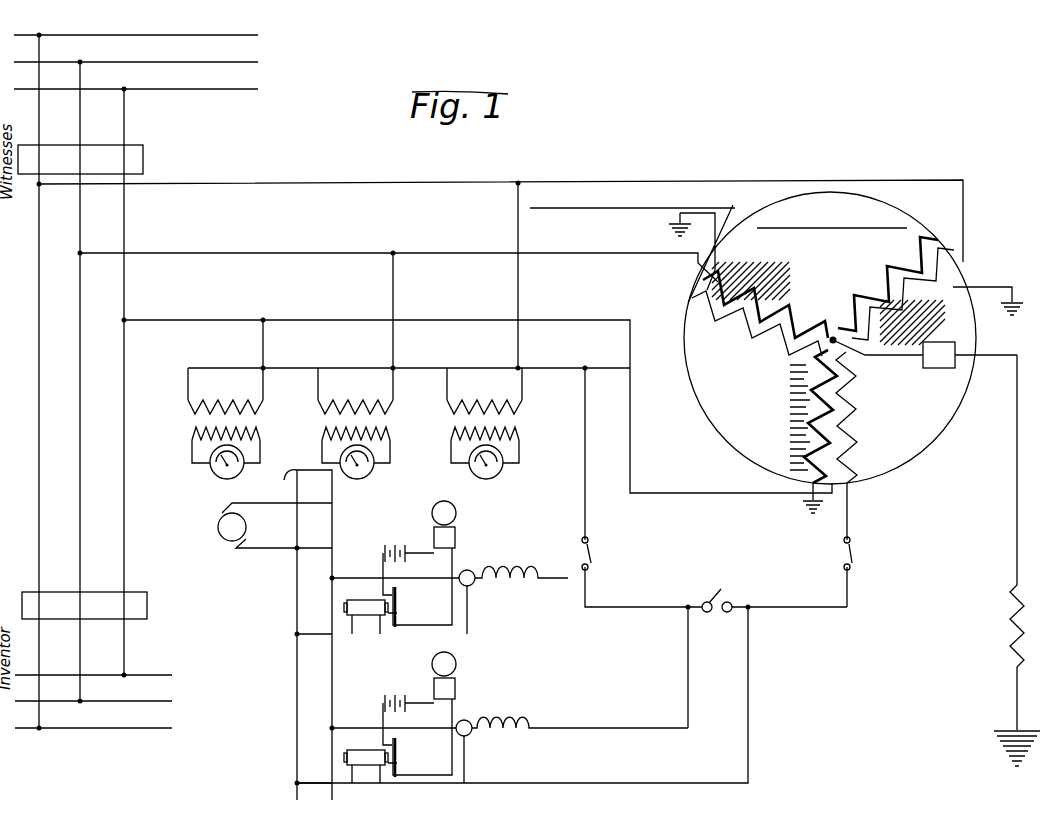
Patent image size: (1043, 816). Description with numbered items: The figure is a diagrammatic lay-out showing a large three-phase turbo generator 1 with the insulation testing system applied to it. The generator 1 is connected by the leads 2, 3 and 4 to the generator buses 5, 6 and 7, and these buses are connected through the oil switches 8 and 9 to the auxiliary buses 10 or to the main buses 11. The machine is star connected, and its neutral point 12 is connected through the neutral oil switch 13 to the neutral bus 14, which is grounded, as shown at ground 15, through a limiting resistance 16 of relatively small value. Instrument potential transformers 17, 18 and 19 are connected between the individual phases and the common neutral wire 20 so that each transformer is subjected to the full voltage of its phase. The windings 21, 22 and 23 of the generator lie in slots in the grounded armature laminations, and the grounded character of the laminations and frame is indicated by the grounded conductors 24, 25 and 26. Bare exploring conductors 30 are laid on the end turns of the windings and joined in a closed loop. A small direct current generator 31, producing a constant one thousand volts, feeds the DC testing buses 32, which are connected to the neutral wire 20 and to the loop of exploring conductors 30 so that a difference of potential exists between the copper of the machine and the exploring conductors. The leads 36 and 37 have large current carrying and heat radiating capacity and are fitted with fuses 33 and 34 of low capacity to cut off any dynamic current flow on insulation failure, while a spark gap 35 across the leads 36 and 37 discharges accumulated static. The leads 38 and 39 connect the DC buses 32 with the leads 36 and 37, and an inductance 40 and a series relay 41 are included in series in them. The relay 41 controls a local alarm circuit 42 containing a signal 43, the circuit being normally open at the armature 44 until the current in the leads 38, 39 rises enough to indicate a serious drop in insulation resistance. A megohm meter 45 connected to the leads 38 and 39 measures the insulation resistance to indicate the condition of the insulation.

The three-phase turbo generator 1 is at (915, 452).
The lead 2 is at (614, 182).
The lead 3 is at (603, 252).
The lead 4 is at (598, 320).
The generator bus 5 is at (50, 452).
The generator bus 6 is at (90, 452).
The generator bus 7 is at (126, 457).
The oil switch 8 is at (133, 157).
The oil switch 9 is at (137, 601).
The auxiliary buses 10 is at (172, 713).
The main buses 11 is at (264, 58).
The neutral point 12 is at (845, 342).
The neutral oil switch 13 is at (944, 360).
The neutral bus 14 is at (1015, 548).
The ground 15 is at (998, 746).
The limiting resistance 16 is at (1010, 625).
The instrument potential transformer 17 is at (218, 390).
The instrument potential transformer 18 is at (345, 390).
The instrument potential transformer 19 is at (475, 388).
The common neutral wire 20 is at (438, 368).
The generator winding 21 is at (937, 310).
The generator winding 22 is at (805, 408).
The generator winding 23 is at (752, 276).
The grounded conductor 24 is at (957, 302).
The grounded conductor 25 is at (806, 446).
The grounded conductor 26 is at (792, 295).
The exploring conductor 30 is at (720, 430).
The direct current generator 31 is at (218, 526).
The DC testing buses 32 is at (290, 486).
The fuse 33 is at (589, 552).
The fuse 34 is at (845, 545).
The spark gap 35 is at (727, 602).
The lead 36 is at (583, 482).
The lead 37 is at (852, 521).
The lead 38 is at (633, 724).
The lead 39 is at (600, 782).
The inductance 40 is at (500, 722).
The series relay 41 is at (398, 764).
The local alarm circuit 42 is at (380, 718).
The signal 43 is at (432, 663).
The armature 44 is at (398, 742).
The megohm meter 45 is at (470, 736).